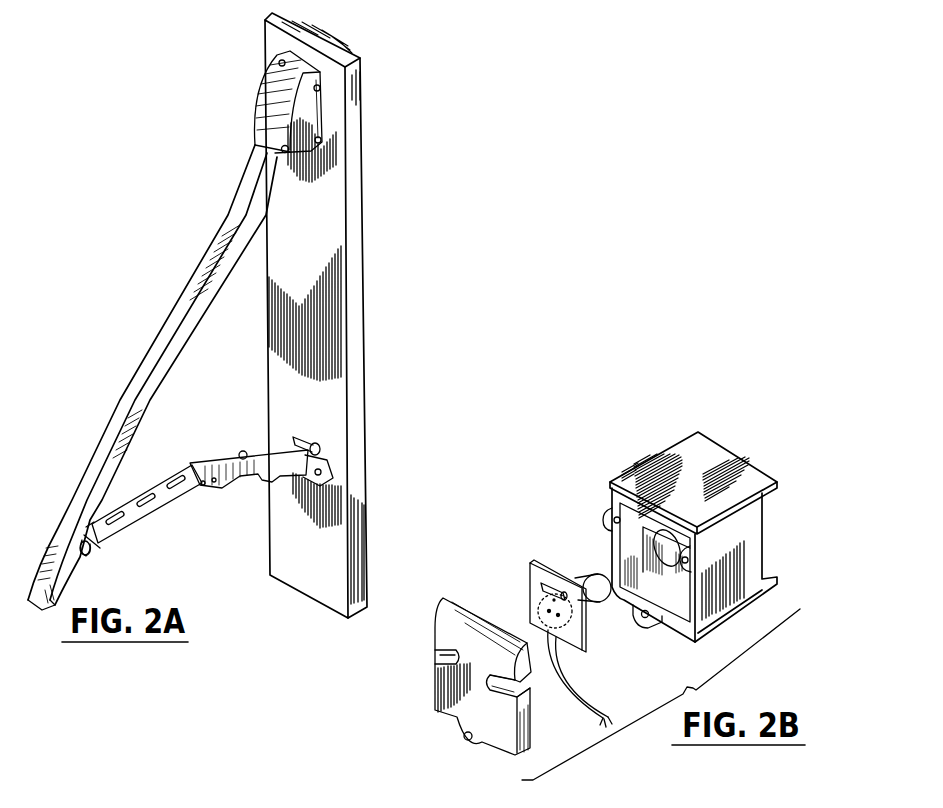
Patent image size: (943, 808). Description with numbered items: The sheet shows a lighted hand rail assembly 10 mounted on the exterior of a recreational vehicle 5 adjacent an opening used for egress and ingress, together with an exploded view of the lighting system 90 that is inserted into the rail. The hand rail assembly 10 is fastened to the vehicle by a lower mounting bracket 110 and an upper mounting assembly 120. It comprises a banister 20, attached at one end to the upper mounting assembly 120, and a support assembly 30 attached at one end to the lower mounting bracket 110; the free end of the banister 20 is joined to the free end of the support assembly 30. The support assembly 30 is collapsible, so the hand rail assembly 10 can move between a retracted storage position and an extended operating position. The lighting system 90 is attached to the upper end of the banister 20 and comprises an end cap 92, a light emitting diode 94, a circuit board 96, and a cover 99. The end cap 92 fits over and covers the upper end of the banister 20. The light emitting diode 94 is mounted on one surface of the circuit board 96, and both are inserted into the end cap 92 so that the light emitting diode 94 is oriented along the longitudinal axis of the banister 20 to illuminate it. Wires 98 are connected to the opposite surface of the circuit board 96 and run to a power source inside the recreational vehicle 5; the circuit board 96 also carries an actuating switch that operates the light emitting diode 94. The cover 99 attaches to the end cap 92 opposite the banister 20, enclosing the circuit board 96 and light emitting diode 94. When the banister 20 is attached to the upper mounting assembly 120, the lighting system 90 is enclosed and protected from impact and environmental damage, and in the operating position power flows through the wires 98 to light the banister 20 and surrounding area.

In FIG. 2A, the hand rail assembly 10 is at (177, 163).
In FIG. 2A, the recreational vehicle 5 is at (365, 213).
In FIG. 2A, the banister 20 is at (182, 292).
In FIG. 2A, the support assembly 30 is at (205, 505).
In FIG. 2A, the lower mounting bracket 110 is at (323, 482).
In FIG. 2A, the upper mounting assembly 120 is at (325, 110).
In FIG. 2B, the lighting system 90 is at (602, 447).
In FIG. 2B, the end cap 92 is at (725, 460).
In FIG. 2B, the light emitting diode 94 is at (593, 573).
In FIG. 2B, the circuit board 96 is at (538, 575).
In FIG. 2B, the wires 98 is at (587, 695).
In FIG. 2B, the cover 99 is at (450, 708).